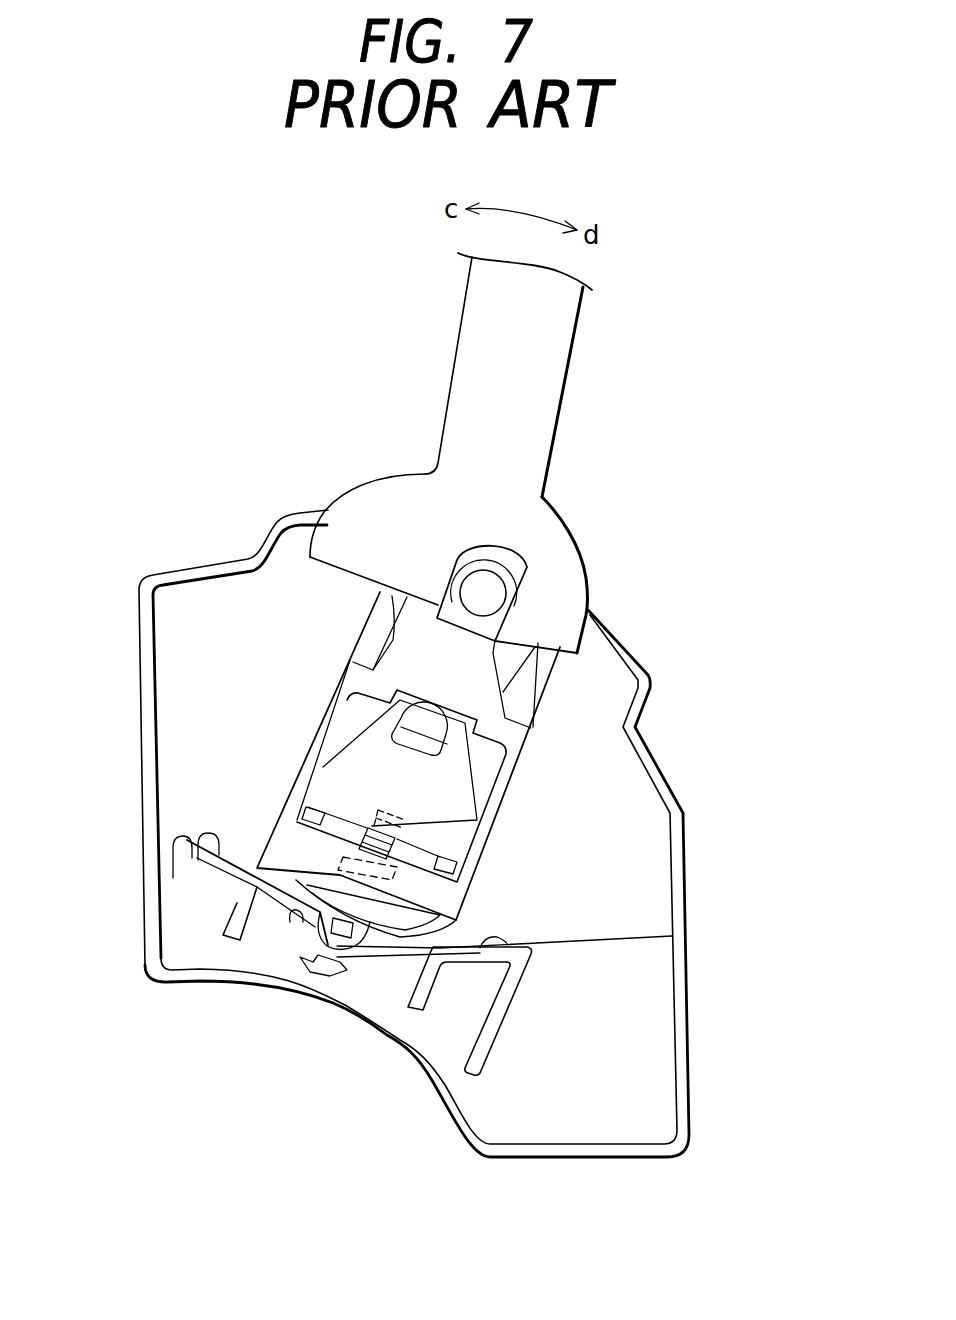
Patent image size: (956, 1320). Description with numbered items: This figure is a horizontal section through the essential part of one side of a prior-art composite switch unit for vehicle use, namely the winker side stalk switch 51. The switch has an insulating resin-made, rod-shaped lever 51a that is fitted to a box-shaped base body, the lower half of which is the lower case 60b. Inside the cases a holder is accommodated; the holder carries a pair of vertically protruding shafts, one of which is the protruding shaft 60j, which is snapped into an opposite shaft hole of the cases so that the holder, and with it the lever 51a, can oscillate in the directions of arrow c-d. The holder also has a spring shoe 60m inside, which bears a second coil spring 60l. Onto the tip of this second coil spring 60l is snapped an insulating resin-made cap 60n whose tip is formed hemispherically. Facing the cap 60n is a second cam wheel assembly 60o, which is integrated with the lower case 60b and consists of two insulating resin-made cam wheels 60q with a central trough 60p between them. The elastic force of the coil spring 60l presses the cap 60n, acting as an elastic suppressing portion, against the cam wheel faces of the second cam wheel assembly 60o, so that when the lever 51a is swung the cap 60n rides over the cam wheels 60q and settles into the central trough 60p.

The winker side stalk switch 51 is at (744, 353).
The lever 51a is at (457, 373).
The lower case 60b is at (689, 875).
The protruding shaft 60j is at (490, 597).
The second coil spring 60l is at (365, 827).
The spring shoe 60m is at (366, 806).
The cap 60n is at (312, 921).
The second cam wheel assembly 60o is at (197, 845).
The central trough 60p is at (340, 968).
The cam wheel 60q is at (250, 890).